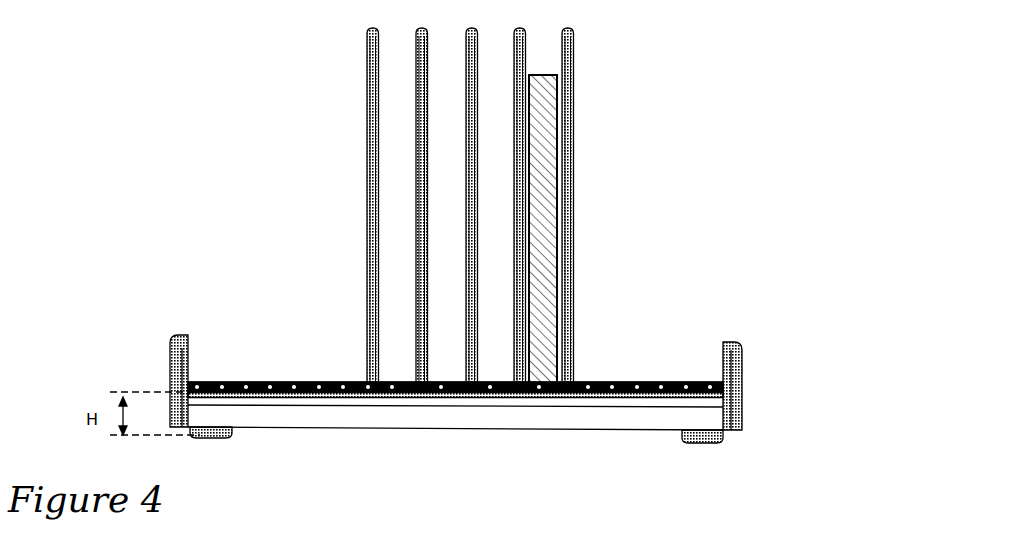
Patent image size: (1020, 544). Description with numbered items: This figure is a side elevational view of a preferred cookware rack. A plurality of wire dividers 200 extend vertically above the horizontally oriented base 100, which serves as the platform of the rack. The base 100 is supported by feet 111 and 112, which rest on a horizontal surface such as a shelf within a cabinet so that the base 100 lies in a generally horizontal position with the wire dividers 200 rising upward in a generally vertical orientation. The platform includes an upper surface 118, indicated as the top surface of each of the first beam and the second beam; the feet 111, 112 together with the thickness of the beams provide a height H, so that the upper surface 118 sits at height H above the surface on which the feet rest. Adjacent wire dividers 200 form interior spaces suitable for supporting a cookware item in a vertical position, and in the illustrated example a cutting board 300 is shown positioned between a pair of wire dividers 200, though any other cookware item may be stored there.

The base 100 is at (756, 402).
The second foot 111 is at (234, 434).
The foot 112 is at (683, 436).
The upper surface 118 is at (233, 368).
The wire dividers 200 is at (370, 72).
The cutting board 300 is at (548, 324).